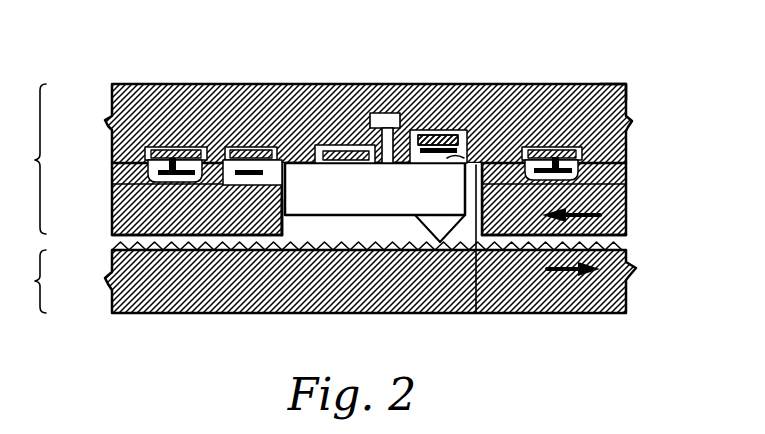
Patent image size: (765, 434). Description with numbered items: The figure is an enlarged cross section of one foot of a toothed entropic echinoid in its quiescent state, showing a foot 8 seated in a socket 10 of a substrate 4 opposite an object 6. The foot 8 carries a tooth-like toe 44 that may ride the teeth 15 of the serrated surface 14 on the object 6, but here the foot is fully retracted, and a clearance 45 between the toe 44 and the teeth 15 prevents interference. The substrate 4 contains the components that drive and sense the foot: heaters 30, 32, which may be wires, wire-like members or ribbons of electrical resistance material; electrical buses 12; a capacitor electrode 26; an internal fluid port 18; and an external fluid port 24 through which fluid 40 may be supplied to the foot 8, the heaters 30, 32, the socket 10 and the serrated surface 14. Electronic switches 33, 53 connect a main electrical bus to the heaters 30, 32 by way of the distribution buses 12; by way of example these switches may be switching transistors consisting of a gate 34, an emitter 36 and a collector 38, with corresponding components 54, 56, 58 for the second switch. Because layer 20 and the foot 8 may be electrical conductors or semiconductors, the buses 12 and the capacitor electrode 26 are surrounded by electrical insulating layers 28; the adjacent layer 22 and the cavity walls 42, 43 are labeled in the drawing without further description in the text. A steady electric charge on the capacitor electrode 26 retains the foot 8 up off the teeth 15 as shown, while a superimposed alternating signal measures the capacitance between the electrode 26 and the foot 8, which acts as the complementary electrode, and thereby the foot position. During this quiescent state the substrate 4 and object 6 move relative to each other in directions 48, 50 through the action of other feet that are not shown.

The substrate 4 is at (322, 159).
The object 6 is at (30, 281).
The foot 8 is at (335, 197).
The socket 10 is at (476, 313).
The electrical buses 12 is at (233, 148).
The serrated surface 14 is at (153, 250).
The teeth 15 is at (108, 242).
The internal fluid port 18 is at (388, 140).
The layer 20 is at (112, 146).
The lower layer 22 is at (112, 218).
The external fluid port 24 is at (378, 113).
The capacitor electrode 26 is at (328, 152).
The electrical insulating layers 28 is at (250, 150).
The heater 30 is at (466, 135).
The heater 32 is at (262, 181).
The electronic switch 33 is at (172, 148).
The gate 34 is at (112, 177).
The emitter 36 is at (160, 148).
The collector 38 is at (180, 148).
The fluid 40 is at (464, 158).
The cavity wall 42 is at (283, 213).
The cavity wall 43 is at (283, 162).
The toe 44 is at (418, 236).
The clearance 45 is at (430, 248).
The direction 48 is at (596, 272).
The direction 50 is at (588, 216).
The electronic switch 53 is at (565, 150).
The transistor component 54 is at (546, 150).
The transistor component 56 is at (627, 86).
The transistor component 58 is at (537, 181).